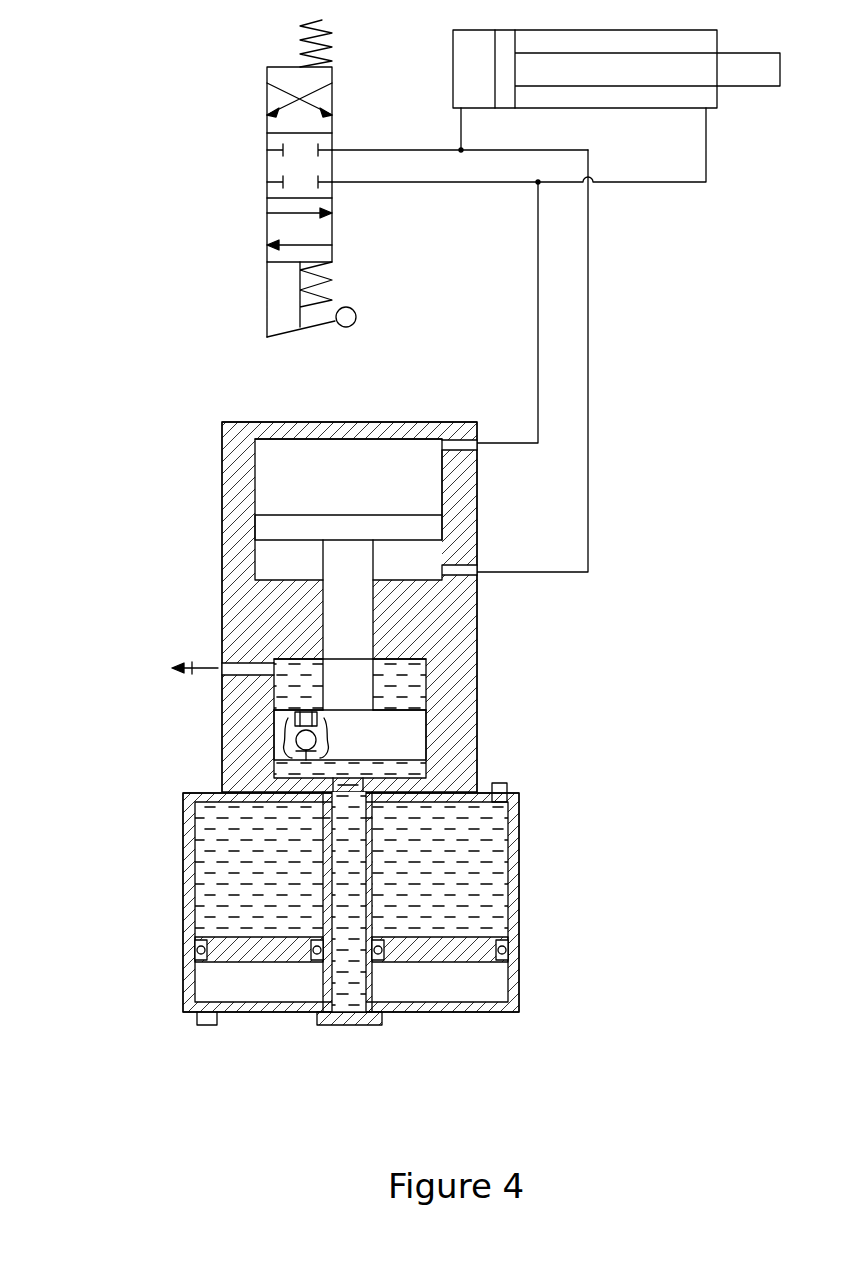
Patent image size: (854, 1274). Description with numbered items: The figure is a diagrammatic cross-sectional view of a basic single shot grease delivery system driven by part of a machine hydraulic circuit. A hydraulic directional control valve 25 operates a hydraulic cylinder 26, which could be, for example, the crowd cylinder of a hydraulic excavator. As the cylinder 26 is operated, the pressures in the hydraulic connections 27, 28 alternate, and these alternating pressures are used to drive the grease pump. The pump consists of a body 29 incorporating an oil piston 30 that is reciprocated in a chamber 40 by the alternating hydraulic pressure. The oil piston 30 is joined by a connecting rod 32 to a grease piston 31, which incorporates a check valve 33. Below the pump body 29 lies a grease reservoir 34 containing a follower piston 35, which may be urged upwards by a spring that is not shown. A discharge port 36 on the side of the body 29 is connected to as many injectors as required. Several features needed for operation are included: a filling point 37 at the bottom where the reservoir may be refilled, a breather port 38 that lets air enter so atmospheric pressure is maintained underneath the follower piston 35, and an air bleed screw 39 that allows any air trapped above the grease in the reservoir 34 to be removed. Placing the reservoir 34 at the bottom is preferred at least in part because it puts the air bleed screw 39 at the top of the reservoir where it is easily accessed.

The hydraulic directional control valve 25 is at (275, 105).
The hydraulic cylinder 26 is at (460, 72).
The hydraulic connection 27 is at (590, 378).
The hydraulic connection 28 is at (540, 313).
The body 29 is at (222, 437).
The oil piston 30 is at (265, 526).
The grease piston 31 is at (402, 730).
The connecting rod 32 is at (362, 636).
The check valve 33 is at (270, 728).
The grease reservoir 34 is at (512, 865).
The follower piston 35 is at (512, 930).
The discharge port 36 is at (222, 665).
The filling point 37 is at (367, 1022).
The breather port 38 is at (195, 1025).
The air bleed screw 39 is at (492, 785).
The chamber 40 is at (277, 475).